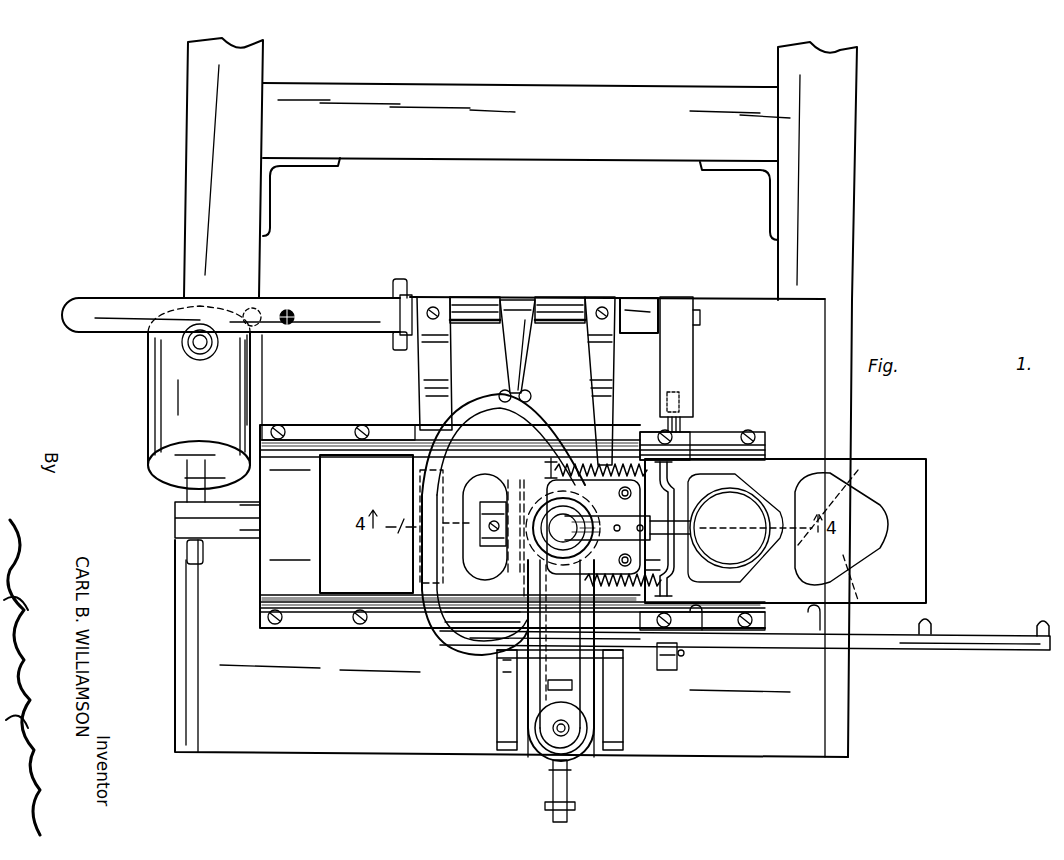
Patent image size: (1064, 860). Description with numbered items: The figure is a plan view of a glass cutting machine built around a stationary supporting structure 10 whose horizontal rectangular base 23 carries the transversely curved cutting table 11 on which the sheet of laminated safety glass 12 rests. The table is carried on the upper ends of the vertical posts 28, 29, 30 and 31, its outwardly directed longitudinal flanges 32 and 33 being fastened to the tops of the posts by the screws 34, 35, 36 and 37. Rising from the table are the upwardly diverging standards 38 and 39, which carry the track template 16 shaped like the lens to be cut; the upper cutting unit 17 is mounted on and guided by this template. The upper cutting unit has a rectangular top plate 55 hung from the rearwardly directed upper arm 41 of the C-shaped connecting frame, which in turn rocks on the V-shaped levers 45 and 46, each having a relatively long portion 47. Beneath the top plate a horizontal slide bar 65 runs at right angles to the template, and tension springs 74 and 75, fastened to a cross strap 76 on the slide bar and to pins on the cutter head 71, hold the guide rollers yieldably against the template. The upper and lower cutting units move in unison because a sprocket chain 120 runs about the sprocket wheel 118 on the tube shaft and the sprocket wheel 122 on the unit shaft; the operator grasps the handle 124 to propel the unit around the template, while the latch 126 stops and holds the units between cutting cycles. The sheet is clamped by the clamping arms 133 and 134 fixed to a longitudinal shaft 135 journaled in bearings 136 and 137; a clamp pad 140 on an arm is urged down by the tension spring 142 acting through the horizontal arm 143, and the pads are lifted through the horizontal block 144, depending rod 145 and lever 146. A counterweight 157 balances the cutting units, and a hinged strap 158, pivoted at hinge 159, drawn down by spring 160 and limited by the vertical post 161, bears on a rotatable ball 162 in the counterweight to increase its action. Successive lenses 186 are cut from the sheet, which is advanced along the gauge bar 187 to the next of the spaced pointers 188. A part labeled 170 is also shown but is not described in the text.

The stationary supporting structure 10 is at (857, 238).
The table 11 is at (264, 562).
The sheet of laminated safety glass 12 is at (882, 462).
The track template 16 is at (440, 638).
The upper cutting unit 17 is at (616, 458).
The base 23 is at (377, 756).
The posts 28 is at (755, 620).
The posts 29 is at (752, 432).
The posts 30 is at (365, 625).
The posts 31 is at (354, 430).
The flange 32 is at (686, 642).
The flange 33 is at (310, 446).
The screws 34 is at (742, 640).
The screws 35 is at (358, 620).
The screws 36 is at (686, 432).
The screws 37 is at (342, 425).
The standard 38 is at (484, 654).
The standard 39 is at (478, 428).
The upper arm 41 is at (561, 660).
The V-shaped lever 45 is at (622, 690).
The V-shaped lever 46 is at (493, 695).
The long portion 47 is at (498, 718).
The top plate 55 is at (582, 446).
The slide bar 65 is at (664, 494).
The cutter head 71 is at (505, 538).
The tension spring 74 is at (662, 434).
The tension spring 75 is at (612, 610).
The cross strap 76 is at (670, 574).
The sprocket wheel 118 is at (532, 756).
The sprocket chain 120 is at (600, 728).
The sprocket wheel 122 is at (542, 580).
The handle 124 is at (744, 508).
The latch 126 is at (567, 786).
The clamping arm 133 is at (420, 376).
The clamping arm 134 is at (614, 366).
The shaft 135 is at (470, 302).
The bearing 136 is at (405, 331).
The bearing 137 is at (632, 302).
The clamp pad 140 is at (430, 566).
The tension spring 142 is at (526, 394).
The horizontal arm 143 is at (524, 345).
The horizontal block 144 is at (689, 340).
The depending rod 145 is at (680, 398).
The lever 146 is at (680, 670).
The counterweight 157 is at (150, 382).
The strap 158 is at (156, 300).
The hinge 159 is at (396, 294).
The spring 160 is at (290, 310).
The vertical post 161 is at (260, 308).
The ball 162 is at (202, 352).
The pulley 170 is at (594, 522).
The lens 186 is at (788, 558).
The gauge bar 187 is at (866, 646).
The pointers 188 is at (1040, 628).